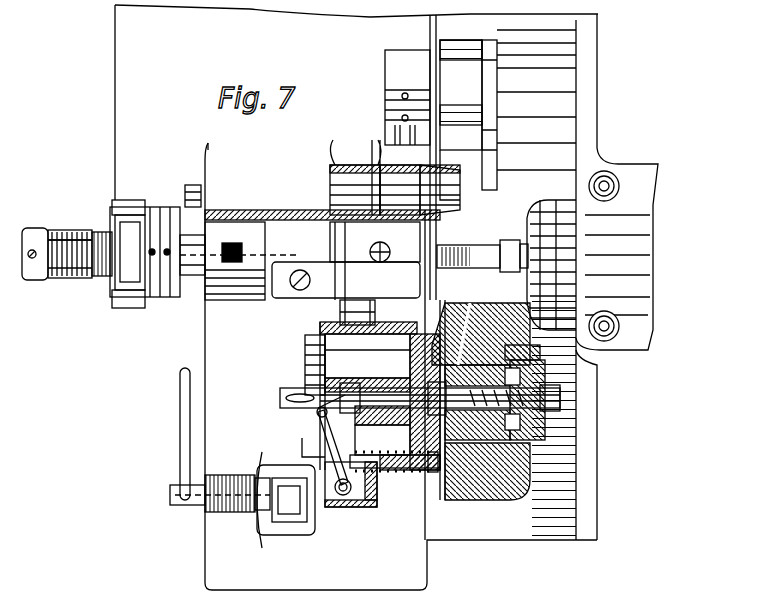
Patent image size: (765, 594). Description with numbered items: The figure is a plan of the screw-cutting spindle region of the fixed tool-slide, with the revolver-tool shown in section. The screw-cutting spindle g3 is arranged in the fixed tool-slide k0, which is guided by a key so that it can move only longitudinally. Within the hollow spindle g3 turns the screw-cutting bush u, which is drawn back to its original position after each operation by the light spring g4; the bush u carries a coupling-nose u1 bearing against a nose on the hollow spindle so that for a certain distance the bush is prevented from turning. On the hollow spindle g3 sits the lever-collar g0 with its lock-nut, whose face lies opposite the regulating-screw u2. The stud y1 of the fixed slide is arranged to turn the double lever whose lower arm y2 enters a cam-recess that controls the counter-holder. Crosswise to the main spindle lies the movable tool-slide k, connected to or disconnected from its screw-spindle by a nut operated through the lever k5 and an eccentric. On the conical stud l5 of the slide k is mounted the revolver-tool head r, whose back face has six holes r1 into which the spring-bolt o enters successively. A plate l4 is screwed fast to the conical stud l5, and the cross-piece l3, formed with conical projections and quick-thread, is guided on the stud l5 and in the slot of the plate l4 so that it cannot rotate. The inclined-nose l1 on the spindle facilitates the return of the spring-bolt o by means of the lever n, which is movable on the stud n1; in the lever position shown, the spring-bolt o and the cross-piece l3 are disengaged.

The fixed tool-slide k0 is at (332, 180).
The movable tool-slide k is at (218, 278).
The lever k5 is at (185, 464).
The screw-cutting bush u is at (57, 242).
The coupling-nose u1 is at (300, 261).
The regulating-screw u2 is at (400, 262).
The lever-collar g0 is at (157, 254).
The screw-cutting spindle g3 is at (103, 278).
The light spring g4 is at (68, 276).
The stud y1 is at (185, 192).
The lower arm of double lever y2 is at (490, 150).
The inclined-nose l1 is at (318, 418).
The cross-piece l3 is at (548, 402).
The plate l4 is at (530, 358).
The conical stud l5 is at (480, 312).
The revolver-tool head r is at (530, 464).
The holes r1 is at (455, 312).
The lever n is at (352, 455).
The stud n1 is at (343, 500).
The spring-bolt o is at (428, 468).